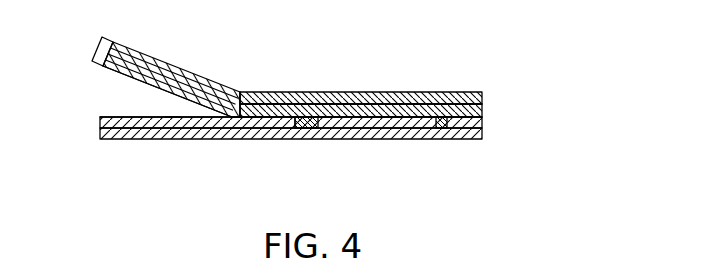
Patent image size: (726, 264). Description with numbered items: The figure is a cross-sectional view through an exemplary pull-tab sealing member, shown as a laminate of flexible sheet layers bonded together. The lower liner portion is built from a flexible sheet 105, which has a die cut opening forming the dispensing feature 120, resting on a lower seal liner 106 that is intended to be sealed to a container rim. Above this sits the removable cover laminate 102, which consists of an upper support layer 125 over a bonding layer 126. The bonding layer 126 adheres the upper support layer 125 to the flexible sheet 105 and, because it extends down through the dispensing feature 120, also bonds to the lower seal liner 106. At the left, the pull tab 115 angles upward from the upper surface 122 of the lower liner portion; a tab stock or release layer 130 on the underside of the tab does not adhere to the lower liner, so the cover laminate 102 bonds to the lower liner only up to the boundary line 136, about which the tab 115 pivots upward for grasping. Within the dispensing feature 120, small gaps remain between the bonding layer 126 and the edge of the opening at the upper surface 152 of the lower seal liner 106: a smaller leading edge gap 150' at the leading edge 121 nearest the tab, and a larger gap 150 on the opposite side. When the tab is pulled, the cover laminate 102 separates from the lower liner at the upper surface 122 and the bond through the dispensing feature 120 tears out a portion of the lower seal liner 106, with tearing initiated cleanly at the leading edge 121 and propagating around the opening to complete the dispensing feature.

The upper removable cover laminate 102 is at (95, 51).
The pull tab 115 is at (153, 60).
The tab stock or release layer 130 is at (120, 73).
The upper surface of the lower liner portion 122 is at (126, 117).
The boundary line 136 is at (242, 90).
The dispensing feature 120 is at (377, 106).
The upper support layer 125 is at (452, 92).
The bonding layer 126 is at (483, 106).
The flexible sheet 105 is at (483, 124).
The lower seal liner 106 is at (483, 134).
The gap 150 is at (450, 155).
The leading edge gap 150' is at (314, 156).
The leading edge of the dispensing feature 121 is at (302, 125).
The upper surface of the lower seal liner 152 is at (172, 121).